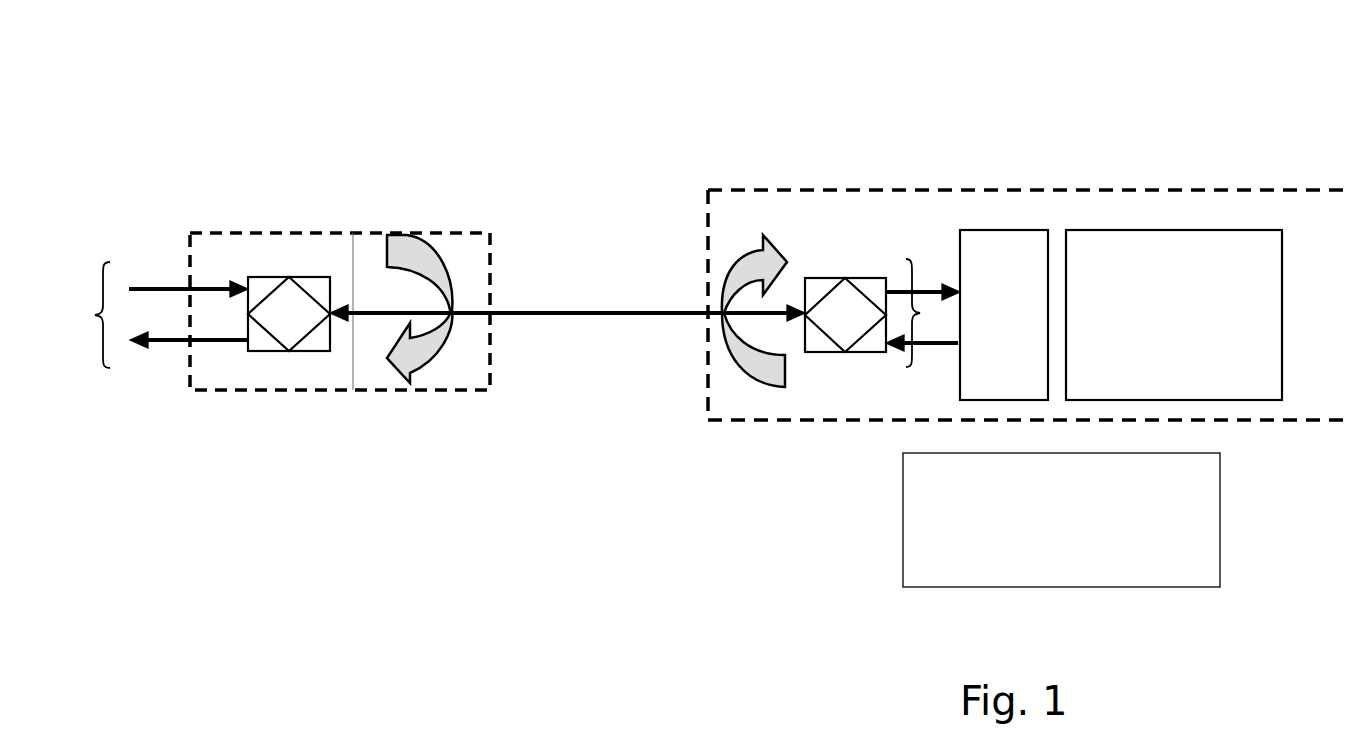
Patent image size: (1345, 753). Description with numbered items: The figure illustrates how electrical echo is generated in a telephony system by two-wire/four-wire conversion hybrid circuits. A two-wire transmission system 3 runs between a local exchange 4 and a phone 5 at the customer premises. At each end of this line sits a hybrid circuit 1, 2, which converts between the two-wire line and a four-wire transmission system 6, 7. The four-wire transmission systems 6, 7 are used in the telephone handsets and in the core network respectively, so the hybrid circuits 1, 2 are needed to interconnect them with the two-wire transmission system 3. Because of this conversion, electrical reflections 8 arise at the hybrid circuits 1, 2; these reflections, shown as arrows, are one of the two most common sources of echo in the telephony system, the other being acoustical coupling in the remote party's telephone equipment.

The hybrid circuit 1 is at (295, 263).
The hybrid circuit 2 is at (840, 264).
The two-wire transmission system 3 is at (587, 342).
The local exchange 4 is at (1172, 178).
The phone 5 is at (387, 208).
The four-wire transmission system 6 is at (80, 312).
The four-wire transmission system 7 is at (932, 302).
The electrical reflections 8 is at (470, 288).